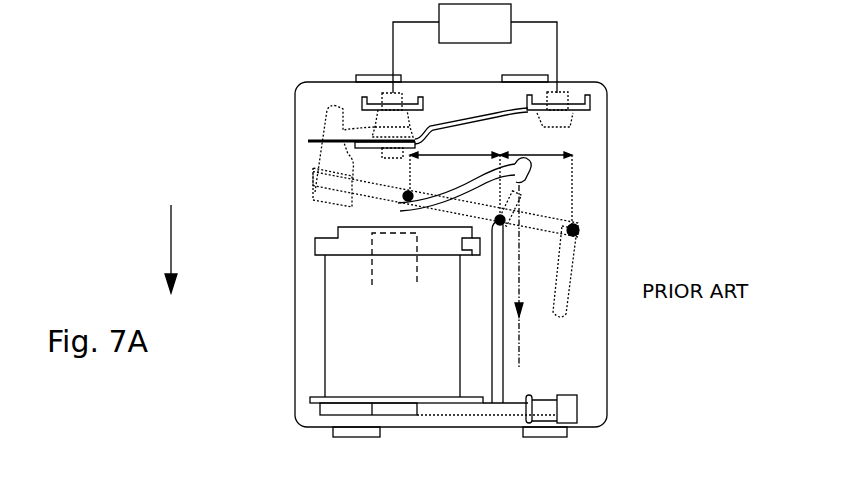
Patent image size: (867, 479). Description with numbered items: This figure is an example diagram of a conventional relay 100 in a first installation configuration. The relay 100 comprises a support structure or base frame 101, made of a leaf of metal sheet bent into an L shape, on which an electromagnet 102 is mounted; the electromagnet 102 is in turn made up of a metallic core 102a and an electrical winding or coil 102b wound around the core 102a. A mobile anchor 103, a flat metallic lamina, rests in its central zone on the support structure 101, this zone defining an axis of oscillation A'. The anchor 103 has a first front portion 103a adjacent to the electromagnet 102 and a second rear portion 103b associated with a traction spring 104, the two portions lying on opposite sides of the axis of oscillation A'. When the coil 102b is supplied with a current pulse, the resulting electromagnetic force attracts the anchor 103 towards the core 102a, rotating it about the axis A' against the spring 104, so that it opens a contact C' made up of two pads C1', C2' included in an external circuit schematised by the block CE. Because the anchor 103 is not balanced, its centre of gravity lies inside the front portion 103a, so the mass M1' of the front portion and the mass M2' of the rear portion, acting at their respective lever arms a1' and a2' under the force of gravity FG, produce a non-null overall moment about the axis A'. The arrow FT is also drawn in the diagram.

The relay 100 is at (231, 89).
The support structure or base frame 101 is at (453, 410).
The electromagnet 102 is at (356, 312).
The metallic core 102a is at (372, 278).
The electrical winding or coil 102b is at (412, 348).
The mobile anchor 103 is at (416, 196).
The first front portion 103a is at (352, 175).
The second rear portion 103b is at (579, 252).
The traction spring 104 is at (521, 354).
The external electrical circuit CE is at (475, 48).
The contact C' is at (436, 105).
The pad C1' is at (375, 92).
The pad C2' is at (309, 149).
The mass corresponding to the front portion M1' is at (390, 182).
The mass corresponding to the rear portion M2' is at (587, 203).
The axis of oscillation A' is at (524, 202).
The lever arm of the front mass a1' is at (491, 177).
The lever arm of the rear mass a2' is at (533, 141).
The force of gravity FG is at (168, 250).
The thermal force FT is at (521, 283).